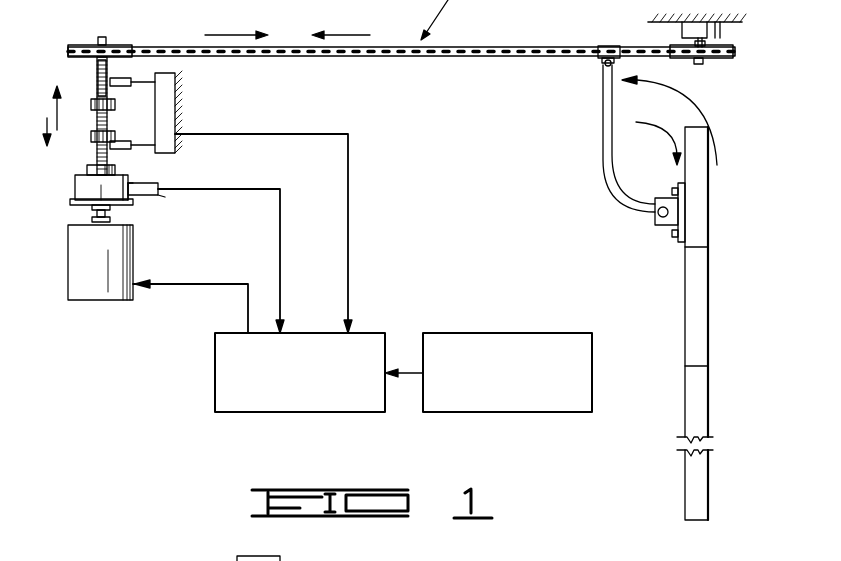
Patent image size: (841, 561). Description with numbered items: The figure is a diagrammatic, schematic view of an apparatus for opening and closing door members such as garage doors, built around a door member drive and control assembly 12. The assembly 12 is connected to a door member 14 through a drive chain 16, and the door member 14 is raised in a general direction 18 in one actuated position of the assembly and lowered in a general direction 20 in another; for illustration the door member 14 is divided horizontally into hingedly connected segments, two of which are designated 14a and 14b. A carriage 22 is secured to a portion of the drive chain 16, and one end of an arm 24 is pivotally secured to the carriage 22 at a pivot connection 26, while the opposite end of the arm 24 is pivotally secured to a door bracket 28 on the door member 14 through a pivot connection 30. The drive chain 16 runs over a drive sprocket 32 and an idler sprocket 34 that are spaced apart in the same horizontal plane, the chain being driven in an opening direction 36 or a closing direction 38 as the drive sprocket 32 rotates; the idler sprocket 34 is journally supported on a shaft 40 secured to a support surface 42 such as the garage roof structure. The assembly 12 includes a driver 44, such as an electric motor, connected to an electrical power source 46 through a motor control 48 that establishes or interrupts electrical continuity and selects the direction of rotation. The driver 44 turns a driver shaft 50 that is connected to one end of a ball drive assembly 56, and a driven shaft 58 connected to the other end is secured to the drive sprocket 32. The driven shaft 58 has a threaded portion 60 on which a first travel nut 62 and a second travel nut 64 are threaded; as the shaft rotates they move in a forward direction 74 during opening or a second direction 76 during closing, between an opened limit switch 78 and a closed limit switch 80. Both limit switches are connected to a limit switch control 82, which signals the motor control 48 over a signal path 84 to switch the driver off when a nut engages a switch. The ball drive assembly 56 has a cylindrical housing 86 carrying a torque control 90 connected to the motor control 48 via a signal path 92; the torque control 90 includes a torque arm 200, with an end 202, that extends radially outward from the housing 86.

The door member drive and control assembly 12 is at (183, 313).
The door member 14 is at (709, 218).
The door member segment 14a is at (698, 236).
The door member segment 14b is at (698, 320).
The drive chain 16 is at (459, 47).
The raising direction 18 is at (703, 110).
The lowering direction 20 is at (658, 140).
The carriage 22 is at (605, 45).
The arm 24 is at (603, 97).
The pivot connection 26 is at (602, 63).
The door bracket 28 is at (665, 226).
The pivot connection 30 is at (657, 213).
The drive sprocket 32 is at (72, 58).
The idler sprocket 34 is at (718, 59).
The opening direction 36 is at (343, 20).
The closing direction 38 is at (231, 31).
The shaft 40 is at (706, 43).
The support surface 42 is at (667, 24).
The driver 44 is at (68, 280).
The electrical power source 46 is at (546, 412).
The motor control 48 is at (315, 412).
The driver shaft 50 is at (111, 216).
The ball drive assembly 56 is at (68, 193).
The driven shaft 58 is at (97, 158).
The threaded portion 60 is at (98, 86).
The first travel nut 62 is at (114, 104).
The second travel nut 64 is at (114, 136).
The forward direction 74 is at (55, 115).
The second direction 76 is at (46, 124).
The opened limit switch 78 is at (128, 70).
The closed limit switch 80 is at (122, 149).
The limit switch control 82 is at (170, 96).
The signal path 84 is at (350, 172).
The housing 86 is at (140, 179).
The torque control 90 is at (172, 199).
The signal path 92 is at (283, 210).
The torque arm 200 is at (160, 187).
The torque arm end 202 is at (266, 558).